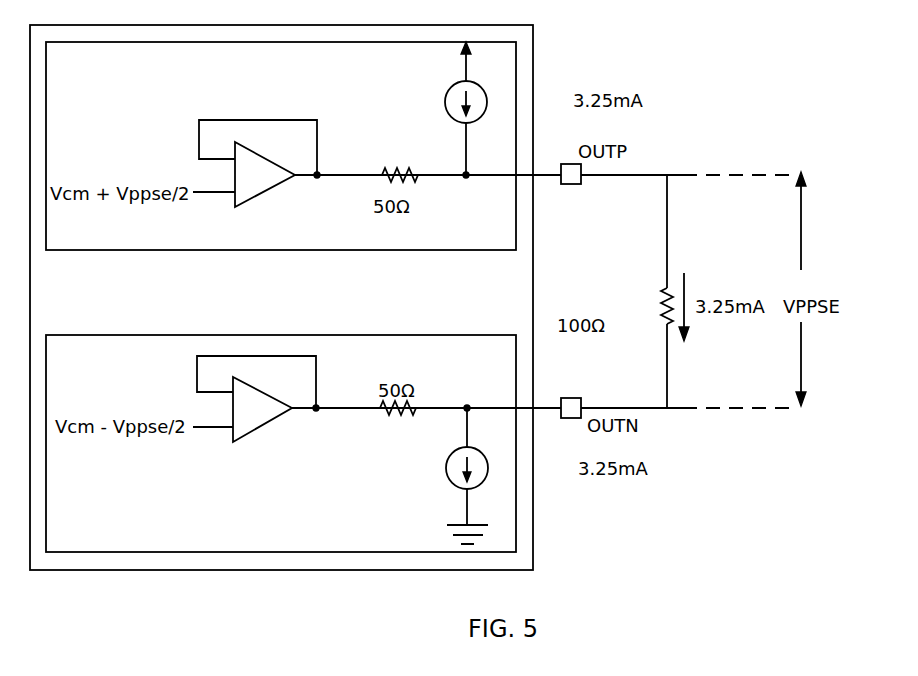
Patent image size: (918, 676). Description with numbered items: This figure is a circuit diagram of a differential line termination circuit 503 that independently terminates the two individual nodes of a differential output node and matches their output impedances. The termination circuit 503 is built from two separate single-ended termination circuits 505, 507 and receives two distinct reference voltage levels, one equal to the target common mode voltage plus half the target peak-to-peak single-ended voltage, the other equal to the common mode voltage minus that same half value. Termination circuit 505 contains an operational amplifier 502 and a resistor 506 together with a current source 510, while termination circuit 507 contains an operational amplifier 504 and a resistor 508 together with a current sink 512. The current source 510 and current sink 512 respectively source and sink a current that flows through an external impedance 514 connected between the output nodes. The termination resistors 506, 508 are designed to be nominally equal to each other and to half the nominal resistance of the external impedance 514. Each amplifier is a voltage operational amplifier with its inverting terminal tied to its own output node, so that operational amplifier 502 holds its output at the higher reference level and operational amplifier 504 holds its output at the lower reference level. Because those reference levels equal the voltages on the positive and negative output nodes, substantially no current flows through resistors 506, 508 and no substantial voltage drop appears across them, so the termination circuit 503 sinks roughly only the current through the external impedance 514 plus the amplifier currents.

The termination circuit 503 is at (212, 24).
The termination circuit 505 is at (107, 252).
The termination circuit 507 is at (107, 336).
The operational amplifier 502 is at (232, 210).
The operational amplifier 504 is at (232, 442).
The resistor 506 is at (383, 170).
The resistor 508 is at (382, 414).
The current source 510 is at (448, 90).
The current sink 512 is at (446, 472).
The external impedance 514 is at (658, 310).